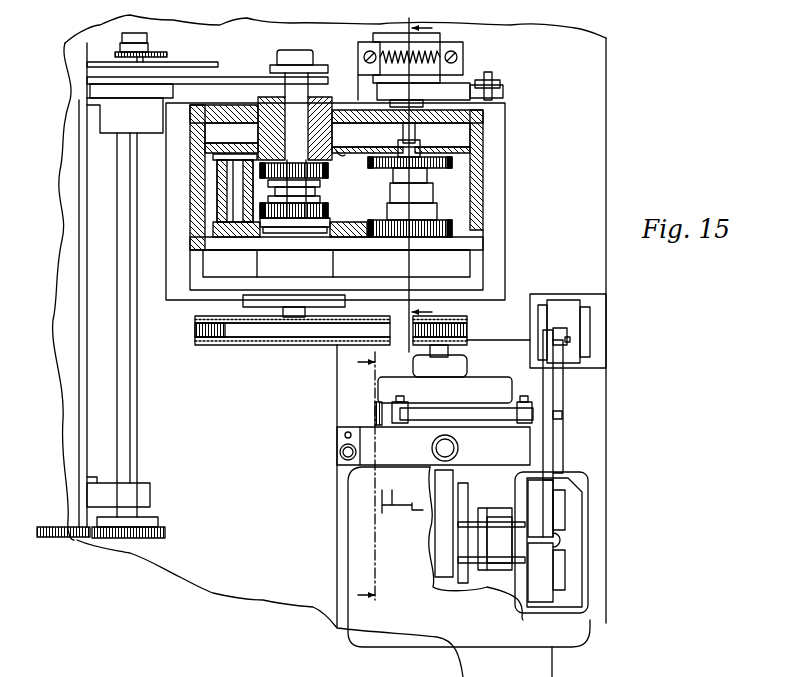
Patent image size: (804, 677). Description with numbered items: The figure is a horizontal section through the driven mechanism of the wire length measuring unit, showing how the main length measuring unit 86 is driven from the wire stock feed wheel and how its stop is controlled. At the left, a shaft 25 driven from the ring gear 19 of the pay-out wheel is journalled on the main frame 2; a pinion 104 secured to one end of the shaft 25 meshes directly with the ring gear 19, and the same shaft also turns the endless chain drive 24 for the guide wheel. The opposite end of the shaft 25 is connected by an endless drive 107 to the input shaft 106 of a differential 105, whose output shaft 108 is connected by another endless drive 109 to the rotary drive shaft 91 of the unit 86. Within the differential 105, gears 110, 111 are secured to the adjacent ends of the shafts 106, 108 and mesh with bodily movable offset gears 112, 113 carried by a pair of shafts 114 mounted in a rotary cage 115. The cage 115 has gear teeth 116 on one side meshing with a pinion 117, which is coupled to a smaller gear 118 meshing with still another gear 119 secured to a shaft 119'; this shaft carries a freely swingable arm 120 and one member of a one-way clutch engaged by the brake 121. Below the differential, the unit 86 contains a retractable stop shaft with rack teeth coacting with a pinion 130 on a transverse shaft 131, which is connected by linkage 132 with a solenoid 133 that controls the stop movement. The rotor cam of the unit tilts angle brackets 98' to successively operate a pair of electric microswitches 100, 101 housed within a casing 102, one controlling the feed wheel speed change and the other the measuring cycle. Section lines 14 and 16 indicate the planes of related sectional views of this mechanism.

The main frame 2 is at (250, 587).
The auxiliary endless drive 14 is at (405, 372).
The auxiliary endless drive 16 is at (408, 37).
The ring gear 19 is at (75, 537).
The endless chain drive 24 is at (163, 50).
The shaft 25 is at (128, 407).
The main length measuring unit 86 is at (387, 617).
The rotary drive shaft 91 is at (432, 357).
The angle brackets 98' is at (480, 526).
The electric microswitch 100 is at (538, 502).
The electric microswitch 101 is at (542, 567).
The casing 102 is at (583, 533).
The pinion 104 is at (165, 533).
The differential 105 is at (485, 175).
The input shaft 106 is at (295, 102).
The endless drive 107 is at (235, 72).
The output shaft 108 is at (295, 227).
The endless drive 109 is at (292, 332).
The gear 110 is at (330, 168).
The gear 111 is at (328, 208).
The offset gear 112 is at (212, 152).
The offset gear 113 is at (210, 233).
The shafts 114 is at (235, 190).
The rotary cage 115 is at (338, 158).
The gear teeth 116 is at (373, 238).
The pinion 117 is at (408, 242).
The gear 118 is at (397, 163).
The gear 119 is at (420, 177).
The shaft 119' is at (433, 140).
The swingable arm 120 is at (500, 82).
The brake 121 is at (452, 53).
The pinion 130 is at (375, 407).
The transverse shaft 131 is at (458, 415).
The linkage 132 is at (547, 402).
The solenoid 133 is at (570, 332).